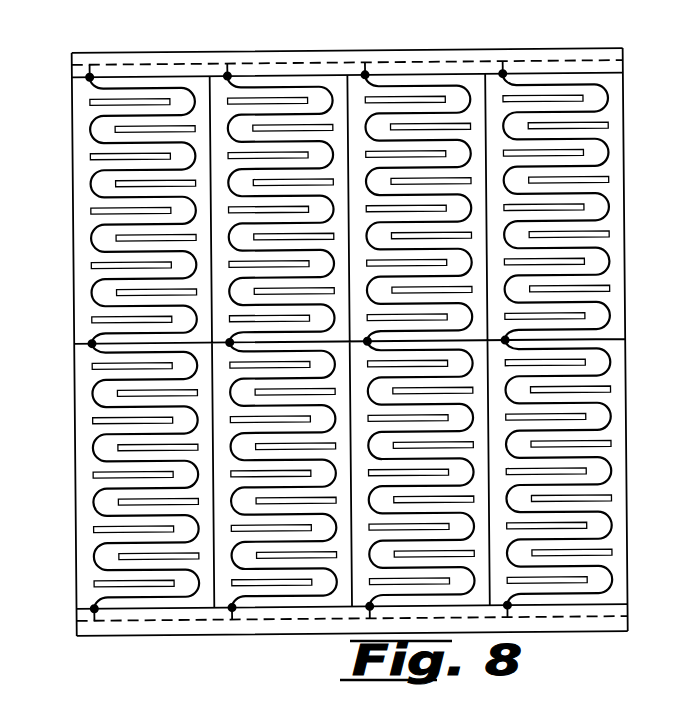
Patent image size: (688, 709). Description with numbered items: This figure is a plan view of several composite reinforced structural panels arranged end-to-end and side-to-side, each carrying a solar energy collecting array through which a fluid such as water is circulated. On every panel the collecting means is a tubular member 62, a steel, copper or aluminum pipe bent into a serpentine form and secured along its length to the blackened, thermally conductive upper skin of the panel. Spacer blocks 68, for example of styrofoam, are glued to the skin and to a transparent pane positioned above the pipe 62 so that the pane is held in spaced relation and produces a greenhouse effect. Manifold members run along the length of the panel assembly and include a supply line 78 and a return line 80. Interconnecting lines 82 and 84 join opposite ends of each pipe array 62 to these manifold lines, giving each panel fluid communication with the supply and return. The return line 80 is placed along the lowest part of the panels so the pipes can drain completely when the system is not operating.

The tubular member 62 is at (113, 283).
The spacer blocks 68 is at (122, 493).
The supply line 78 is at (107, 63).
The return line 80 is at (170, 623).
The interconnecting line 82 is at (227, 78).
The interconnecting line 84 is at (263, 623).